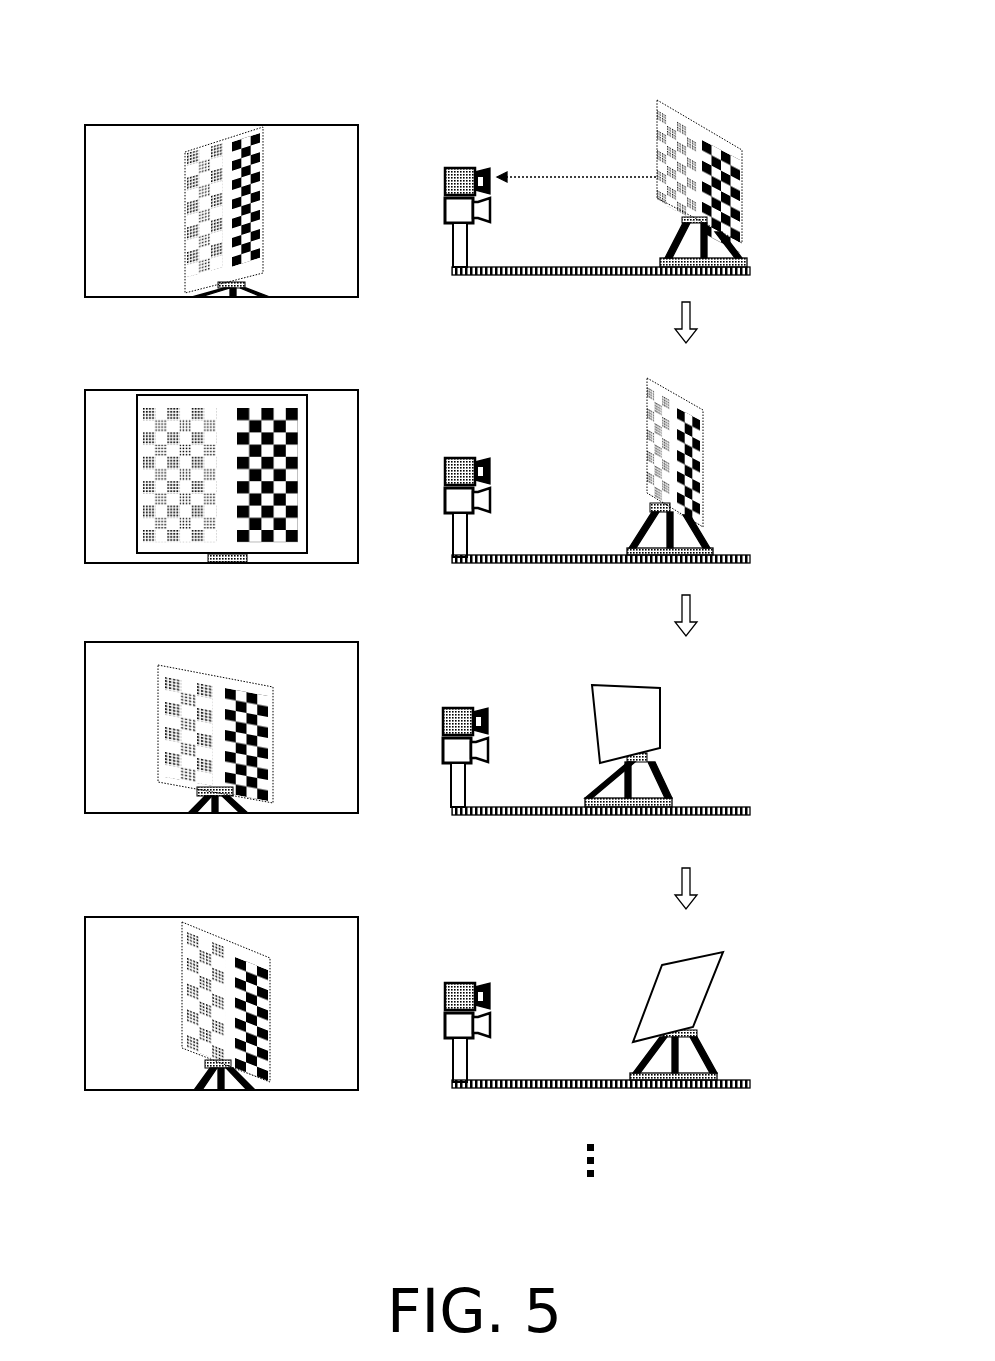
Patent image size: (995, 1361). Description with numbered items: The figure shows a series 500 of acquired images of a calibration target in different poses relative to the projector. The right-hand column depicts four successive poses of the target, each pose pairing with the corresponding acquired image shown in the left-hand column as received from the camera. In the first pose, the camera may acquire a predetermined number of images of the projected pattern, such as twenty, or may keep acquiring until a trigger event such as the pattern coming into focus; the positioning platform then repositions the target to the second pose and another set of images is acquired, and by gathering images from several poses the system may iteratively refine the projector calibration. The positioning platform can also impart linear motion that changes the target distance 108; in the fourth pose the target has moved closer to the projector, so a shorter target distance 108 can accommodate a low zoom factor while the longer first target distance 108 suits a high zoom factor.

The series of acquired images 500 is at (783, 42).
The target distance 108 is at (577, 214).